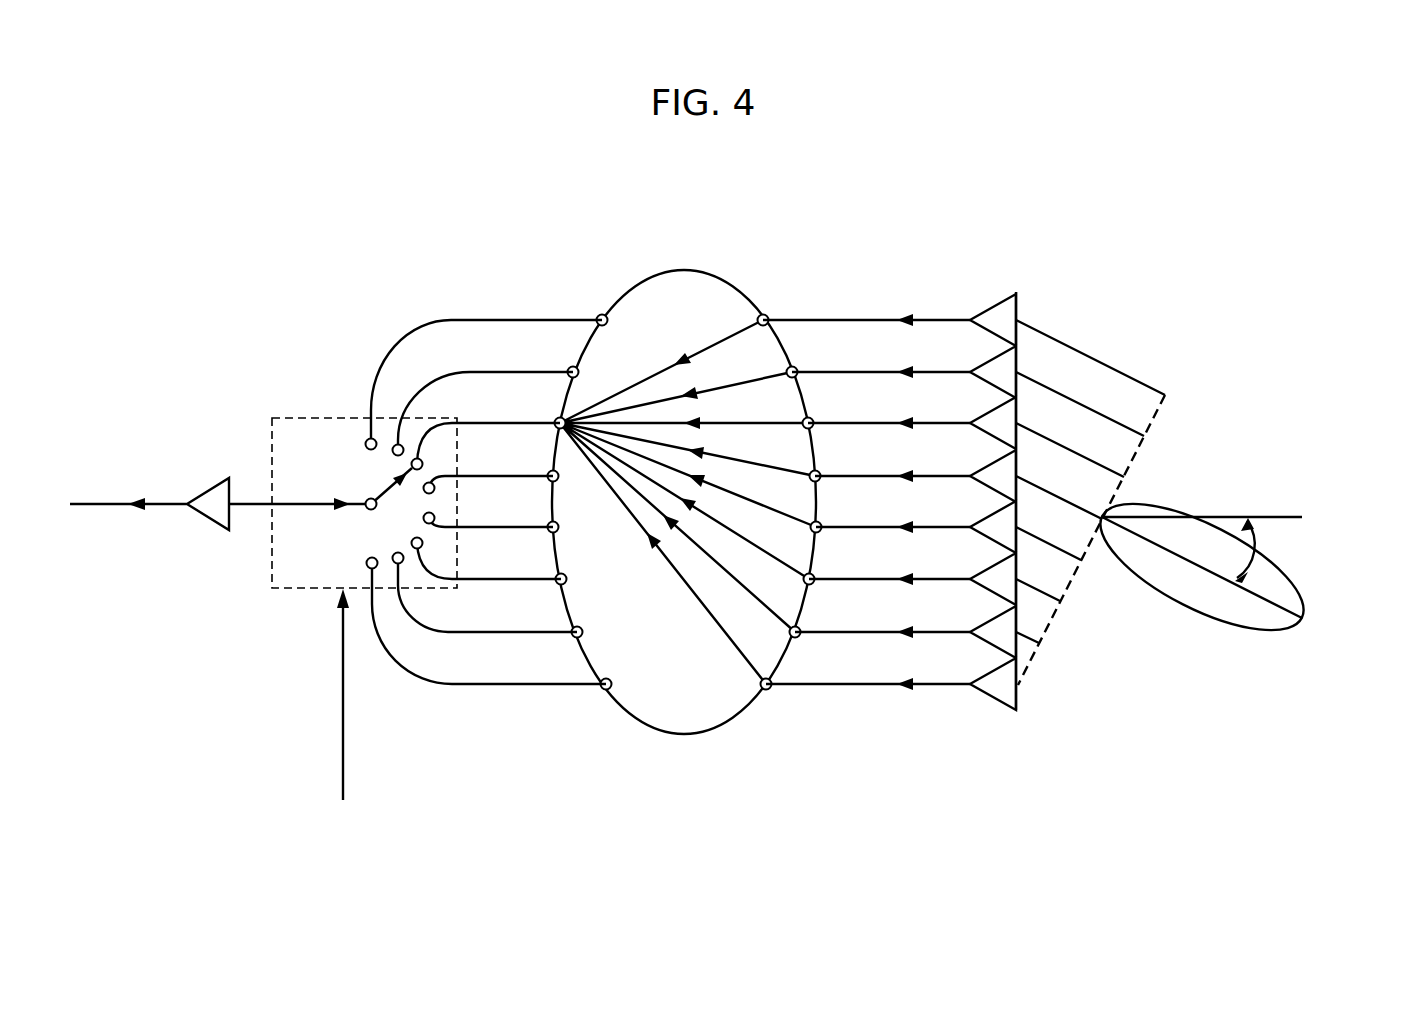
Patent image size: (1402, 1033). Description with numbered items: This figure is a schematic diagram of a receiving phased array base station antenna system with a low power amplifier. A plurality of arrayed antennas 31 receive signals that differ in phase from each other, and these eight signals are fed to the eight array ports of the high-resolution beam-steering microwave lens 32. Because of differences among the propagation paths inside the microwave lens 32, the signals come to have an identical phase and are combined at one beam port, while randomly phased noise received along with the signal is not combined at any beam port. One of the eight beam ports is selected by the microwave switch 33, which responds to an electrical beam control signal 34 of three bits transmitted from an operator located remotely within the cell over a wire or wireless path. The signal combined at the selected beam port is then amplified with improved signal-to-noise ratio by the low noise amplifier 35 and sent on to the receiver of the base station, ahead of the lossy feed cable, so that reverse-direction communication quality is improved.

The arrayed antennas 31 is at (1017, 305).
The microwave lens 32 is at (733, 288).
The microwave switch 33 is at (293, 418).
The electrical beam control signal 34 is at (268, 798).
The low noise amplifier 35 is at (208, 490).